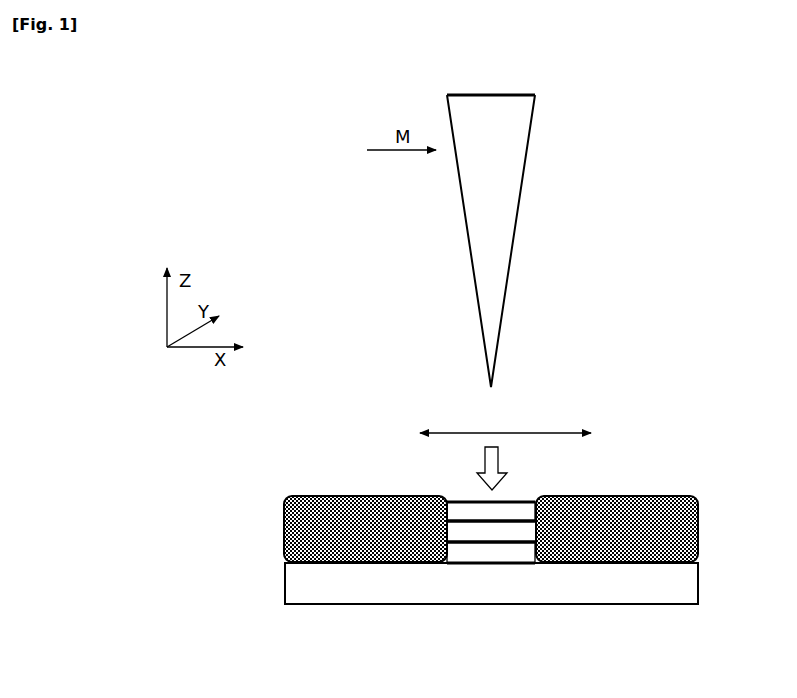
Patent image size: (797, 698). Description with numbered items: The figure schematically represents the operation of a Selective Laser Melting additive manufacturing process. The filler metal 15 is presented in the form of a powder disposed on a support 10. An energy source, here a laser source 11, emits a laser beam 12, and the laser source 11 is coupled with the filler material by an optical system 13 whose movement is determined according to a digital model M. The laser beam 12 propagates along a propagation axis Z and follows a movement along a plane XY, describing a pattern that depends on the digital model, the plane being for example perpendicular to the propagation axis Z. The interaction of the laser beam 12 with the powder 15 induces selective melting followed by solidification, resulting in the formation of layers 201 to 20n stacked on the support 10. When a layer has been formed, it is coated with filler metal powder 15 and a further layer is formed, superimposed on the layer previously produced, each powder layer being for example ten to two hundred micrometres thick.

The support 10 is at (625, 580).
The laser source 11 is at (500, 226).
The laser beam 12 is at (480, 471).
The optical system 13 is at (538, 420).
The filler metal 15 is at (316, 512).
The layer 20n is at (515, 511).
The layer 201 is at (509, 560).